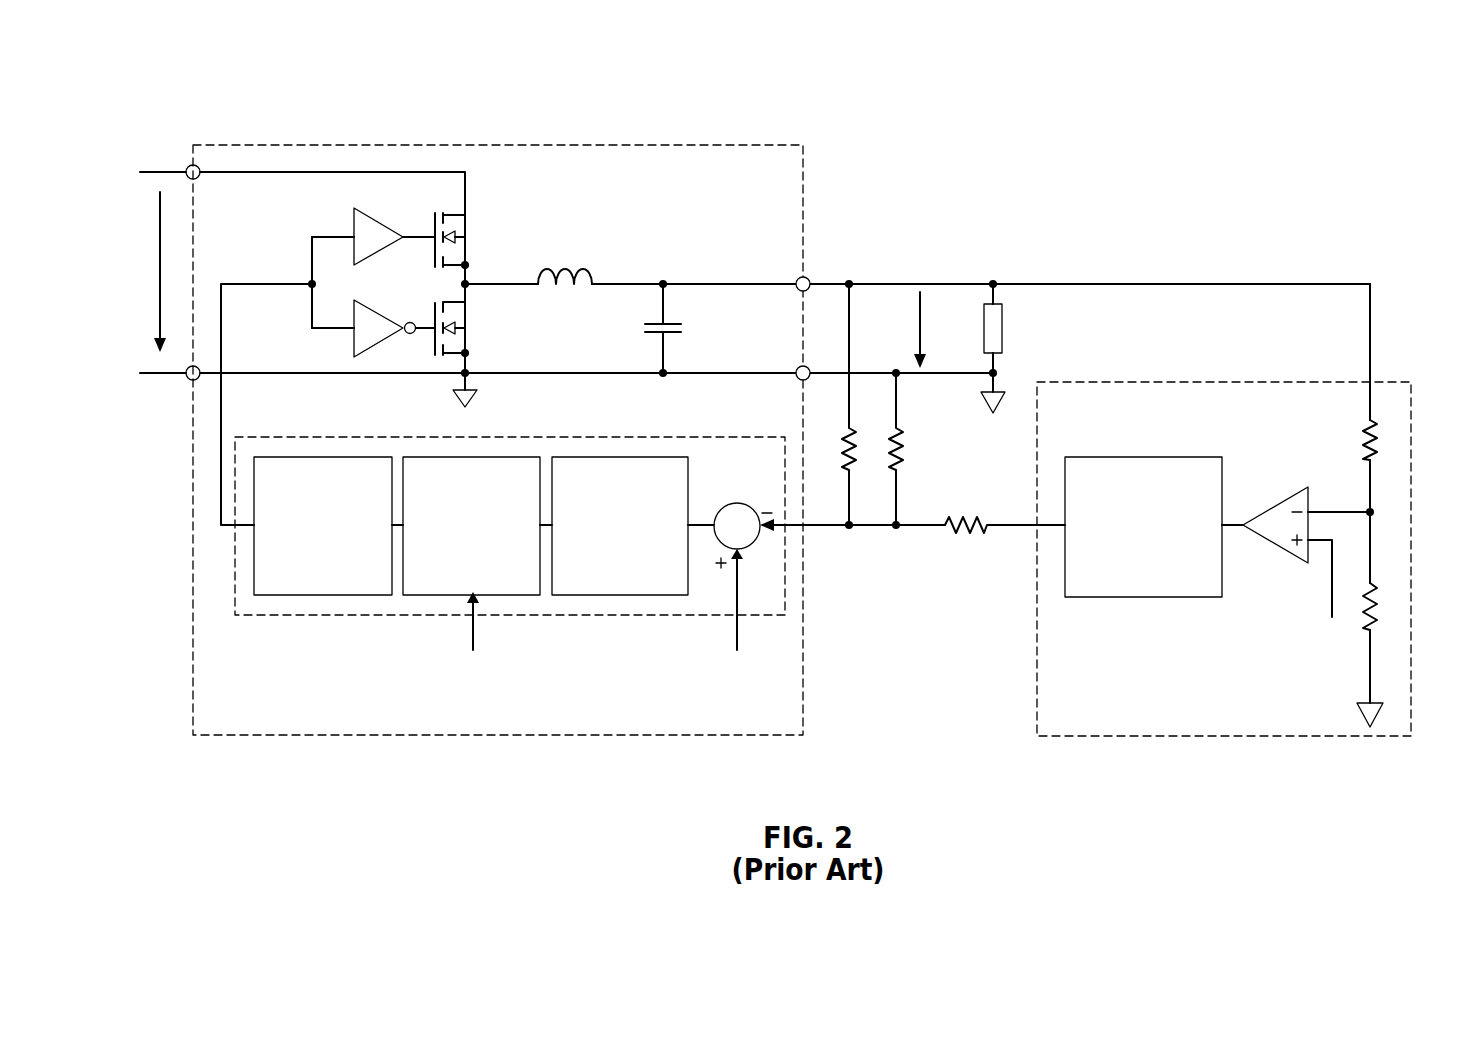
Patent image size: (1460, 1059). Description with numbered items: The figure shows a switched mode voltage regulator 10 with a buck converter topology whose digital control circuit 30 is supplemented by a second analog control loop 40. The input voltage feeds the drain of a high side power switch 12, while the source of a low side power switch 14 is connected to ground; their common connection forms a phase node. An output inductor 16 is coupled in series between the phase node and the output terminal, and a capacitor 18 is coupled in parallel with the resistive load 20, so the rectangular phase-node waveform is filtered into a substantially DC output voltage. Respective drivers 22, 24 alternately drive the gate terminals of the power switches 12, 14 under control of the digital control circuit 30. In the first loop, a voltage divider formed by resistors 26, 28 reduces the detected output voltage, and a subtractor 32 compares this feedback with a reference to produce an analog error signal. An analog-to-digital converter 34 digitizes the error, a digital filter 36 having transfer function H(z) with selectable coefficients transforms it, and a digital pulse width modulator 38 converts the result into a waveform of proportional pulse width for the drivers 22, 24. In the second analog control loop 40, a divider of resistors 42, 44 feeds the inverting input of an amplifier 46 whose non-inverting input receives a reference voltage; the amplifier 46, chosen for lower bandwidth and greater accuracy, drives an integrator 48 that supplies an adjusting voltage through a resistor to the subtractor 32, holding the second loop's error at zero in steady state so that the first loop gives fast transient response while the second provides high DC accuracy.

The switched mode voltage regulator 10 is at (253, 143).
The high side power switch 12 is at (467, 228).
The low side power switch 14 is at (467, 320).
The output inductor 16 is at (565, 266).
The capacitor 18 is at (682, 327).
The resistive load 20 is at (998, 302).
The driver 22 is at (352, 223).
The driver 24 is at (352, 333).
The resistor 26 is at (900, 458).
The resistor 28 is at (853, 452).
The digital control circuit 30 is at (295, 437).
The subtractor 32 is at (740, 502).
The analog-to-digital converter 34 is at (620, 457).
The digital filter 36 is at (503, 457).
The digital pulse width modulator 38 is at (325, 457).
The second analog control loop 40 is at (1100, 380).
The resistor 42 is at (1367, 432).
The resistor 44 is at (1372, 605).
The amplifier 46 is at (1272, 505).
The integrator 48 is at (1143, 457).